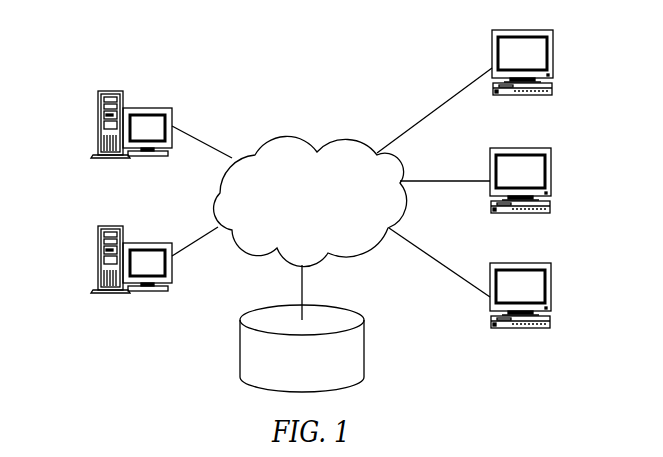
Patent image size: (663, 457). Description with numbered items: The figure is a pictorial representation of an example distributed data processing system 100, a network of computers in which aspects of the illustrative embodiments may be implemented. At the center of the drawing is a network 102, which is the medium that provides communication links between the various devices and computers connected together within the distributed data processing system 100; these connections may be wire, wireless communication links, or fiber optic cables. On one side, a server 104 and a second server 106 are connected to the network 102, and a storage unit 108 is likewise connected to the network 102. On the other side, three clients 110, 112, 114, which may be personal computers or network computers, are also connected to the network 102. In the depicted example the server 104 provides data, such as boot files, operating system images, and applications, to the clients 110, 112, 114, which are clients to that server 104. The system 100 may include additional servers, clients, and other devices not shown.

The distributed data processing system 100 is at (371, 70).
The network 102 is at (290, 140).
The server 104 is at (100, 127).
The server 106 is at (100, 258).
The storage unit 108 is at (241, 346).
The client 110 is at (553, 60).
The client 112 is at (552, 178).
The client 114 is at (553, 297).